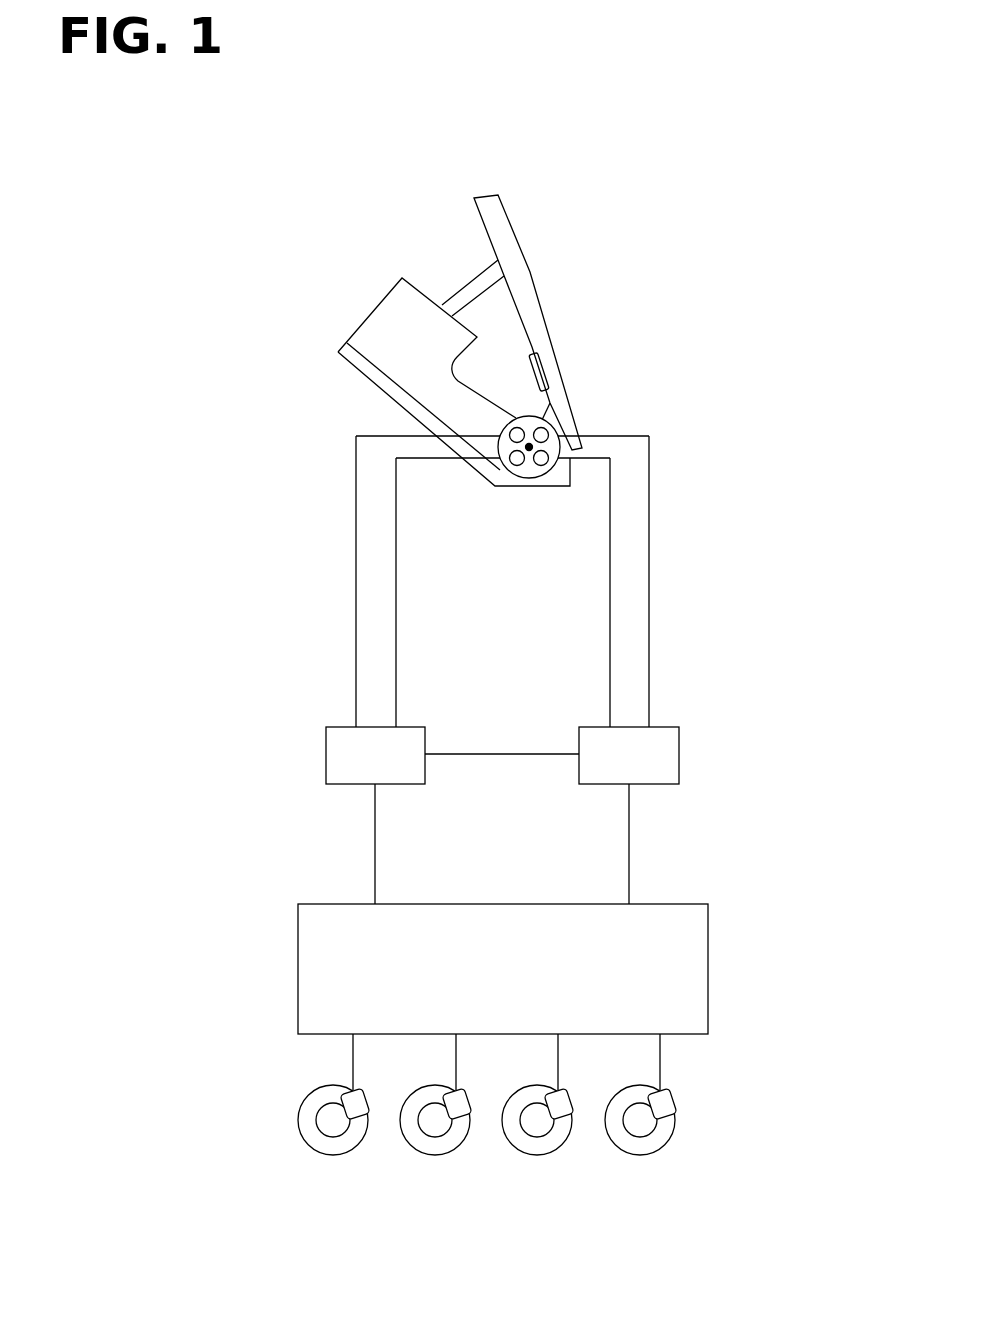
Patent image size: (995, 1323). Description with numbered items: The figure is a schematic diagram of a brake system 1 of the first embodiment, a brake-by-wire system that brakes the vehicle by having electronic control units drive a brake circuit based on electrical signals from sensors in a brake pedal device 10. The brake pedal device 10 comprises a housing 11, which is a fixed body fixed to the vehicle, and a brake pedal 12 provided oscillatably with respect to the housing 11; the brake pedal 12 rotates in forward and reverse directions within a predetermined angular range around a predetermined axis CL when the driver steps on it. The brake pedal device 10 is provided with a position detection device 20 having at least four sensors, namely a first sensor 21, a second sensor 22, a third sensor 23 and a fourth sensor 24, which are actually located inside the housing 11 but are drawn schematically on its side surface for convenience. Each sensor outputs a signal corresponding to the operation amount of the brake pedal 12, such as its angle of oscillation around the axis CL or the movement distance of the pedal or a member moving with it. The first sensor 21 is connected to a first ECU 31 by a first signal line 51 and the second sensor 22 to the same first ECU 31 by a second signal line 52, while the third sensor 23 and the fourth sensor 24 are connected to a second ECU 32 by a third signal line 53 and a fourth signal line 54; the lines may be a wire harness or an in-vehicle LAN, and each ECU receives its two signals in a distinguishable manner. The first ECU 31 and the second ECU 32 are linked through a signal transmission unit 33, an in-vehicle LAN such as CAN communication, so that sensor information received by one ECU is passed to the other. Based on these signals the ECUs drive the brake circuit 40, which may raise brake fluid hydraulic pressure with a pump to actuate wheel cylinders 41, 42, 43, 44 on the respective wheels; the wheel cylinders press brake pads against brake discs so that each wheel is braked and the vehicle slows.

The brake system 1 is at (258, 203).
The brake pedal device 10 is at (392, 273).
The housing 11 is at (393, 323).
The brake pedal 12 is at (497, 238).
The position detection device 20 is at (523, 413).
The first sensor 21 is at (517, 435).
The second sensor 22 is at (517, 458).
The third sensor 23 is at (541, 435).
The fourth sensor 24 is at (541, 458).
The predetermined axis CL is at (529, 450).
The first ECU 31 is at (326, 755).
The second ECU 32 is at (679, 753).
The signal transmission unit 33 is at (495, 758).
The brake circuit 40 is at (298, 968).
The wheel cylinder 41 is at (366, 1102).
The wheel cylinder 42 is at (468, 1102).
The wheel cylinder 43 is at (570, 1102).
The wheel cylinder 44 is at (673, 1102).
The first signal line 51 is at (356, 600).
The second signal line 52 is at (396, 630).
The third signal line 53 is at (649, 598).
The fourth signal line 54 is at (610, 614).